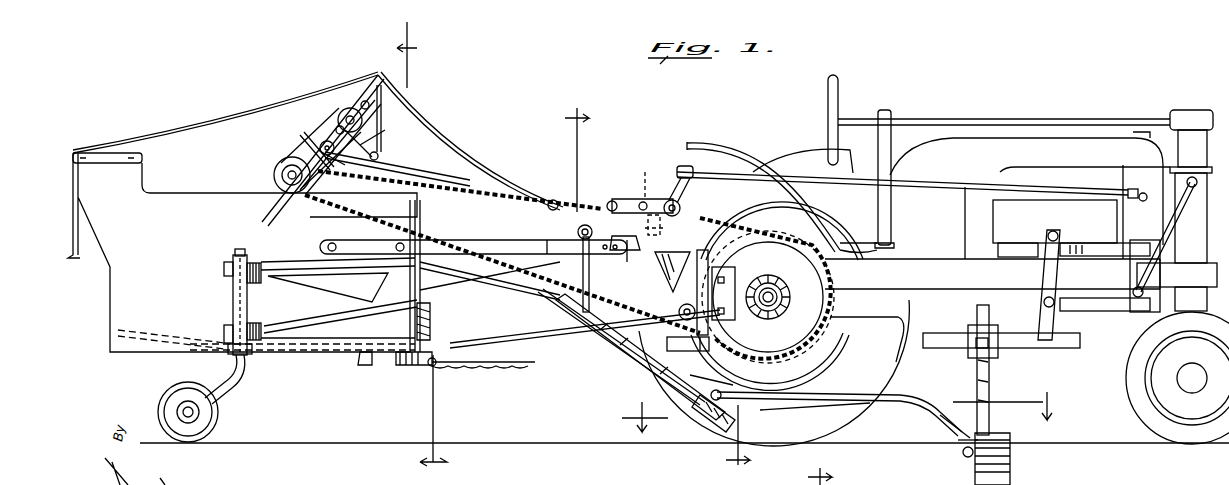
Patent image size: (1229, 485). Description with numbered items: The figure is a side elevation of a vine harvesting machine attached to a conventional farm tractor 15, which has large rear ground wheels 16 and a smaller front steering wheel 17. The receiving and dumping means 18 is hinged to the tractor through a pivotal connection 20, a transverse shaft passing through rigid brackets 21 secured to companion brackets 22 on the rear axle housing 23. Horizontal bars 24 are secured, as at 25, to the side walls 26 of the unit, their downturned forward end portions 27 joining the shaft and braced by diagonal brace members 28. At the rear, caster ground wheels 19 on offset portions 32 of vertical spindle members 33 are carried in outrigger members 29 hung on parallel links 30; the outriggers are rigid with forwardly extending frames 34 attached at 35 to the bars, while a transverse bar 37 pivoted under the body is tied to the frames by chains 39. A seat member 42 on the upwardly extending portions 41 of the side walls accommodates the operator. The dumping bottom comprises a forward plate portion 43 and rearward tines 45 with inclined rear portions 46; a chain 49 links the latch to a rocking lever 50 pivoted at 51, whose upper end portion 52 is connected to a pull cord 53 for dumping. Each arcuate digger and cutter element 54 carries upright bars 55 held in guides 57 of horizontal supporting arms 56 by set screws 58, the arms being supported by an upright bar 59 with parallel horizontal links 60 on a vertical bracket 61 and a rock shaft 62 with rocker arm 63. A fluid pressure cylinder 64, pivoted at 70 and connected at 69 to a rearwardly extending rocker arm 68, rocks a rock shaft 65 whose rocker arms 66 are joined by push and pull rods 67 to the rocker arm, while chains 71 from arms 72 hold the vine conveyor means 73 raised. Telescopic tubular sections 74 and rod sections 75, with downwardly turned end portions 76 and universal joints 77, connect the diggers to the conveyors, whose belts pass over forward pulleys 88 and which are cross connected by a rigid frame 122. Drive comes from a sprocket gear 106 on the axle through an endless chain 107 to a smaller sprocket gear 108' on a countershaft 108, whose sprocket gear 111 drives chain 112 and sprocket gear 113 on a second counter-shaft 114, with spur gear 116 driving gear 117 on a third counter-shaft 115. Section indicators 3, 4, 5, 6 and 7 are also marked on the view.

The section line 3 is at (407, 47).
The section line 4 is at (433, 420).
The section line 5 is at (657, 287).
The section line 6 is at (837, 412).
The section line 7 is at (820, 469).
The farm tractor 15 is at (938, 251).
The ground wheels 16 is at (884, 386).
The steering wheel 17 is at (1133, 392).
The receiving and dumping means 18 is at (147, 364).
The caster ground wheels 19 is at (218, 414).
The pivotal connection 20 is at (712, 356).
The rigid brackets 21 is at (706, 270).
The companion brackets 22 is at (712, 213).
The rear axle housing 23 is at (771, 286).
The horizontal bars 24 is at (510, 240).
The securing means 25 is at (366, 236).
The side walls 26 is at (192, 193).
The forward end portions 27 is at (736, 278).
The diagonal brace members 28 is at (655, 278).
The outrigger members 29 is at (233, 292).
The parallel links 30 is at (224, 330).
The offset portions 32 is at (232, 384).
The vertical spindle members 33 is at (248, 354).
The forwardly extending frames 34 is at (330, 284).
The attachment 35 is at (620, 238).
The transverse bar 37 is at (400, 358).
The chain 39 is at (368, 356).
The upwardly extending portions 41 is at (142, 183).
The seat member 42 is at (128, 143).
The forward plate portion 43 is at (395, 335).
The tines 45 is at (205, 348).
The inclined rear portions 46 is at (125, 332).
The chain 49 is at (498, 366).
The rocking lever 50 is at (540, 318).
The pivot 51 is at (548, 338).
The upper end portion 52 is at (550, 198).
The pull cord 53 is at (470, 158).
The digger and cutter element 54 is at (1012, 472).
The upright bars 55 is at (990, 378).
The horizontal supporting arms 56 is at (955, 350).
The guides 57 is at (975, 332).
The set screws 58 is at (990, 338).
The upright bar 59 is at (1046, 272).
The parallel horizontal links 60 is at (1082, 256).
The vertical bracket 61 is at (1135, 256).
The rock shaft 62 is at (1160, 236).
The rocker arm 63 is at (1110, 215).
The fluid pressure cylinder 64 is at (662, 240).
The rock shaft 65 is at (688, 208).
The rocker arm 66 is at (678, 168).
The push and pull rod 67 is at (940, 182).
The rearwardly extending rocker arm 68 is at (690, 302).
The pivotal connection 69 is at (647, 190).
The pivotal mounting 70 is at (640, 372).
The chains 71 is at (580, 226).
The arms 72 is at (626, 199).
The vine conveyor means 73 is at (588, 360).
The tubular section 74 is at (884, 402).
The rod section 75 is at (815, 416).
The downwardly turned end portions 76 is at (950, 432).
The universal joints 77 is at (966, 460).
The pulley 88 is at (700, 418).
The sprocket gear 106 is at (800, 352).
The endless chain 107 is at (500, 188).
The countershaft 108 is at (296, 150).
The smaller sprocket gear 108' is at (287, 142).
The sprocket gear 111 is at (270, 128).
The chain 112 is at (300, 135).
The sprocket gear 113 is at (345, 110).
The second counter-shaft 114 is at (382, 85).
The third counter-shaft 115 is at (318, 150).
The spur gear 116 is at (376, 88).
The gear 117 is at (338, 128).
The rigid frame 122 is at (587, 274).